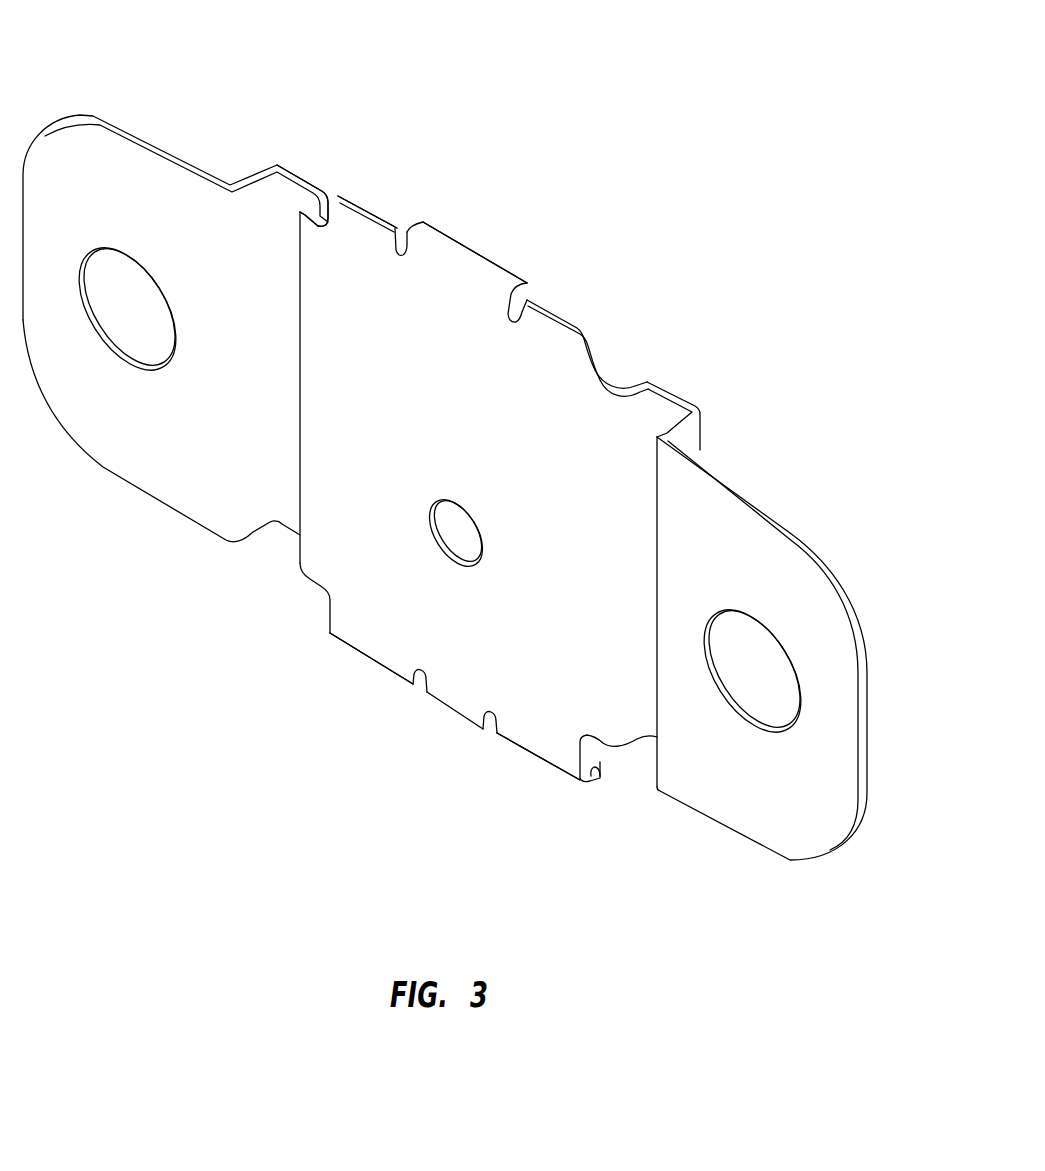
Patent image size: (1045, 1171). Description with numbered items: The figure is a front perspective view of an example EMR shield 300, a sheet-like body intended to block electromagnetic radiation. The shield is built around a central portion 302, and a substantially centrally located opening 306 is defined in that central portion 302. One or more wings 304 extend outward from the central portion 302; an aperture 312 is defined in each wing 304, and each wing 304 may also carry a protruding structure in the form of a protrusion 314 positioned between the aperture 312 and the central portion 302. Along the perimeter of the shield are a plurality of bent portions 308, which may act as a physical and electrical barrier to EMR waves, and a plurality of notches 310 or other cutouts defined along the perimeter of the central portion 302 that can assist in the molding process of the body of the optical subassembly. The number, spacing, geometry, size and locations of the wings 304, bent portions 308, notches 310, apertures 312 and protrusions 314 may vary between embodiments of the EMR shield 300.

The EMR shield 300 is at (462, 499).
The central portion 302 is at (497, 443).
The wing 304 is at (135, 153).
The opening 306 is at (463, 535).
The bent portion 308 is at (463, 267).
The notch 310 is at (409, 222).
The aperture 312 is at (138, 321).
The protrusion 314 is at (308, 172).